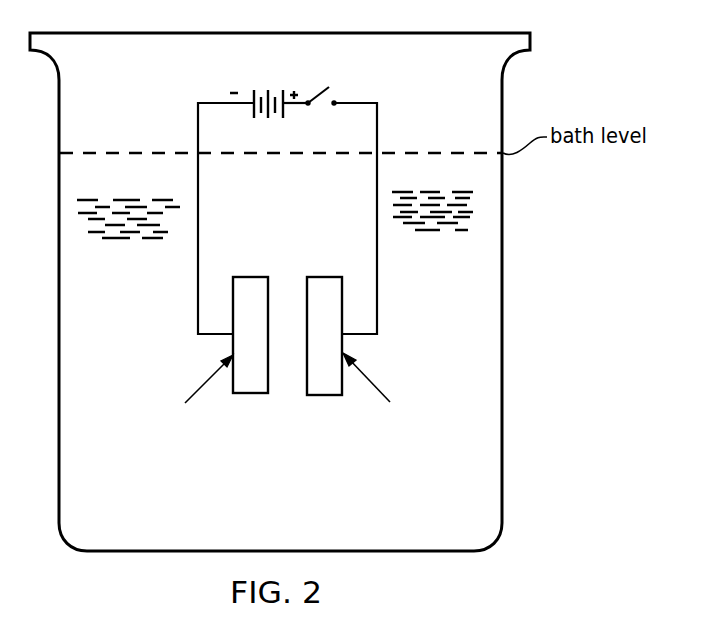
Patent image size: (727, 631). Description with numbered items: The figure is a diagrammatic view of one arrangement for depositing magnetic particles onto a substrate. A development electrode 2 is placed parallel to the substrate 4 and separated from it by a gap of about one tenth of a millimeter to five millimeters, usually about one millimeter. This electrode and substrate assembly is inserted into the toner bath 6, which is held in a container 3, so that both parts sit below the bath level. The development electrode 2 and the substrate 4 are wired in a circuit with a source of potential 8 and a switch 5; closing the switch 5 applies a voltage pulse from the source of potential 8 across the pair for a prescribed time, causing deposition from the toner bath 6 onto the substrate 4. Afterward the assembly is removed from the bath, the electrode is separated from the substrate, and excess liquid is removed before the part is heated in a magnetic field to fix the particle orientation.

The development electrode 2 is at (252, 277).
The container 3 is at (503, 272).
The substrate 4 is at (315, 277).
The switch 5 is at (326, 97).
The toner bath 6 is at (487, 372).
The source of potential 8 is at (255, 80).